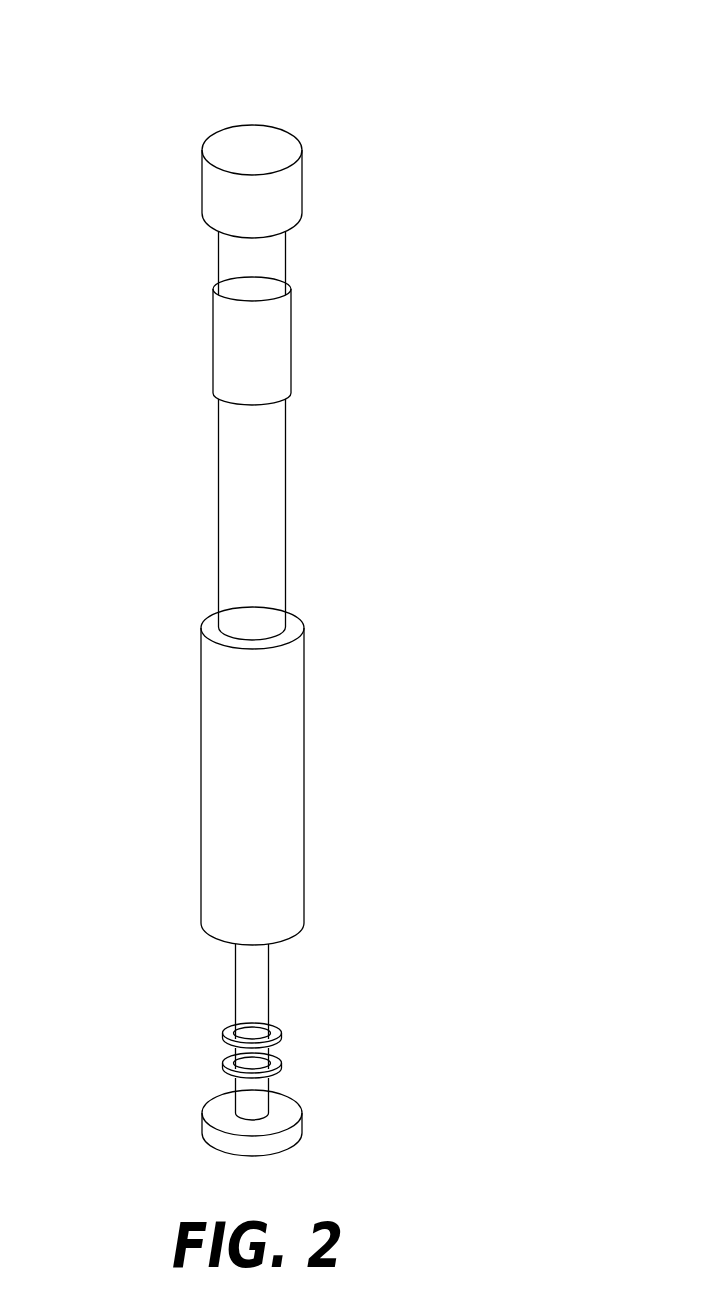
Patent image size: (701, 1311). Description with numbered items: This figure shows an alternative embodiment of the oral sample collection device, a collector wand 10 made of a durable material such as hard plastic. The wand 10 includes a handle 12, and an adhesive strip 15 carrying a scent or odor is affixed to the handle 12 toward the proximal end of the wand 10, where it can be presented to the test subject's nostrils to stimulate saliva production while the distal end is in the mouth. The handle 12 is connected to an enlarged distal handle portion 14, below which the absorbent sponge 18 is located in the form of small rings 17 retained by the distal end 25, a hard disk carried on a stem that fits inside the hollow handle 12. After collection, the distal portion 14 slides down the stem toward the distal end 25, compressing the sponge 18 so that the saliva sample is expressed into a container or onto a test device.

The collector wand 10 is at (253, 88).
The handle 12 is at (286, 491).
The distal handle portion 14 is at (304, 745).
The adhesive strip 15 is at (291, 337).
The small rings 17 is at (283, 1067).
The sponge 18 is at (229, 1052).
The distal end 25 is at (302, 1118).